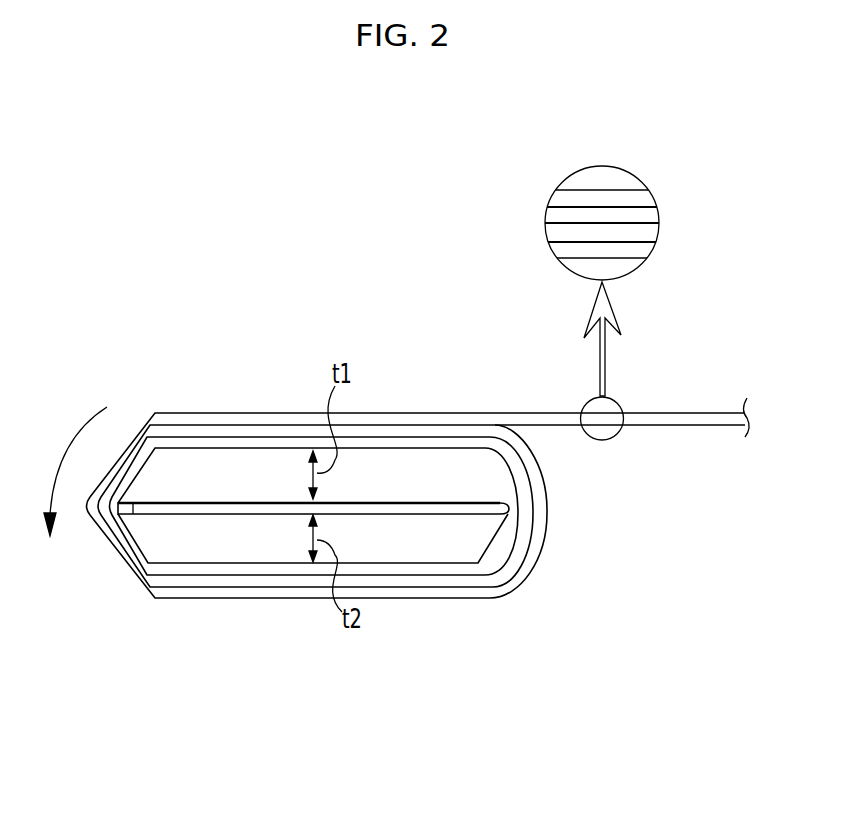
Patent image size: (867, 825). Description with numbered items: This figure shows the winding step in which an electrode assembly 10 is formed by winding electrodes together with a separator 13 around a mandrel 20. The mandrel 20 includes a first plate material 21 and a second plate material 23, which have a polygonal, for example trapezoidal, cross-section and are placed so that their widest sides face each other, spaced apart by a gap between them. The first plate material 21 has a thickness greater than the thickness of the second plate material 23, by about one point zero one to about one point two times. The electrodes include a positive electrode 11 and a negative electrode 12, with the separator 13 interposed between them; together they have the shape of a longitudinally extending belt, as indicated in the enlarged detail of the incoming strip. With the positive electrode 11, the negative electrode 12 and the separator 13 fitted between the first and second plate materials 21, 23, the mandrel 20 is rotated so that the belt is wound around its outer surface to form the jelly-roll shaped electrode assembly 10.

The electrode assembly 10 is at (649, 226).
The positive electrode 11 is at (628, 244).
The negative electrode 12 is at (658, 212).
The separator 13 is at (657, 193).
The mandrel 20 is at (313, 597).
The first plate material 21 is at (175, 493).
The second plate material 23 is at (235, 548).